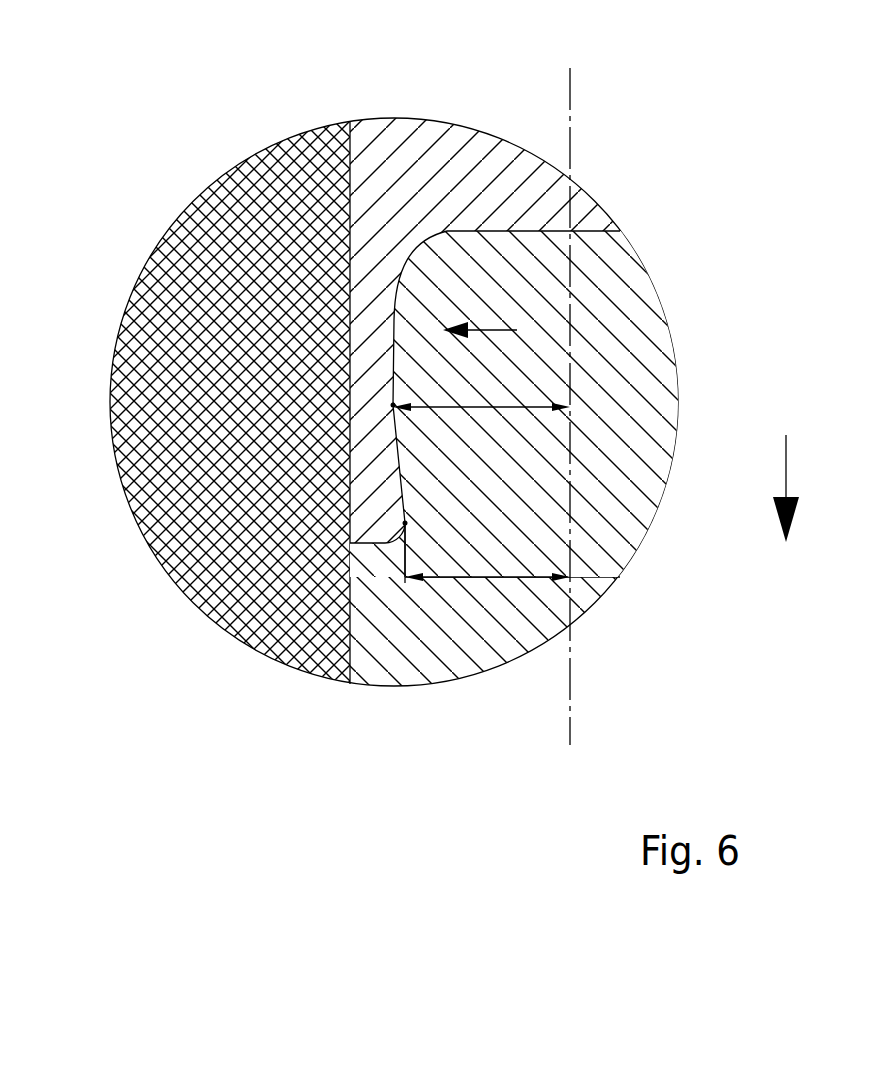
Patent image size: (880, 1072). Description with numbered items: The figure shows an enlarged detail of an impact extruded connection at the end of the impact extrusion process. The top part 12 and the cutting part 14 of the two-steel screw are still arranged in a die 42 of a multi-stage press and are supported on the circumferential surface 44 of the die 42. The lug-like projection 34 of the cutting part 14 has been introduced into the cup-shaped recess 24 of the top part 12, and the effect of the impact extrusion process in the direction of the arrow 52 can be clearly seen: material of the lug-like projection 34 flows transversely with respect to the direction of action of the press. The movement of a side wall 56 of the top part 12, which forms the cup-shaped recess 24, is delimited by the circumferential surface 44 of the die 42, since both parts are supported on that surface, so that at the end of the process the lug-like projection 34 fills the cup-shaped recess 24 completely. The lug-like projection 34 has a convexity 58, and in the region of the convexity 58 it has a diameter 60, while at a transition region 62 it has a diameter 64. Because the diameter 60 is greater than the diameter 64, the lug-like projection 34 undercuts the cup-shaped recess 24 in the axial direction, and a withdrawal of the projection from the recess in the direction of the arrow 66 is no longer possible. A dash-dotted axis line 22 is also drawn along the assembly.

The top part 12 is at (425, 164).
The cutting part 14 is at (470, 607).
The axis 22 is at (570, 163).
The cup-shaped recess 24 is at (585, 233).
The lug-like projection 34 is at (617, 452).
The die 42 is at (253, 472).
The circumferential surface 44 is at (262, 615).
The arrow 52 is at (485, 321).
The side wall 56 is at (375, 462).
The convexity 58 is at (395, 330).
The diameter 60 is at (475, 407).
The transition region 62 is at (363, 543).
The diameter 64 is at (497, 577).
The arrow 66 is at (786, 465).